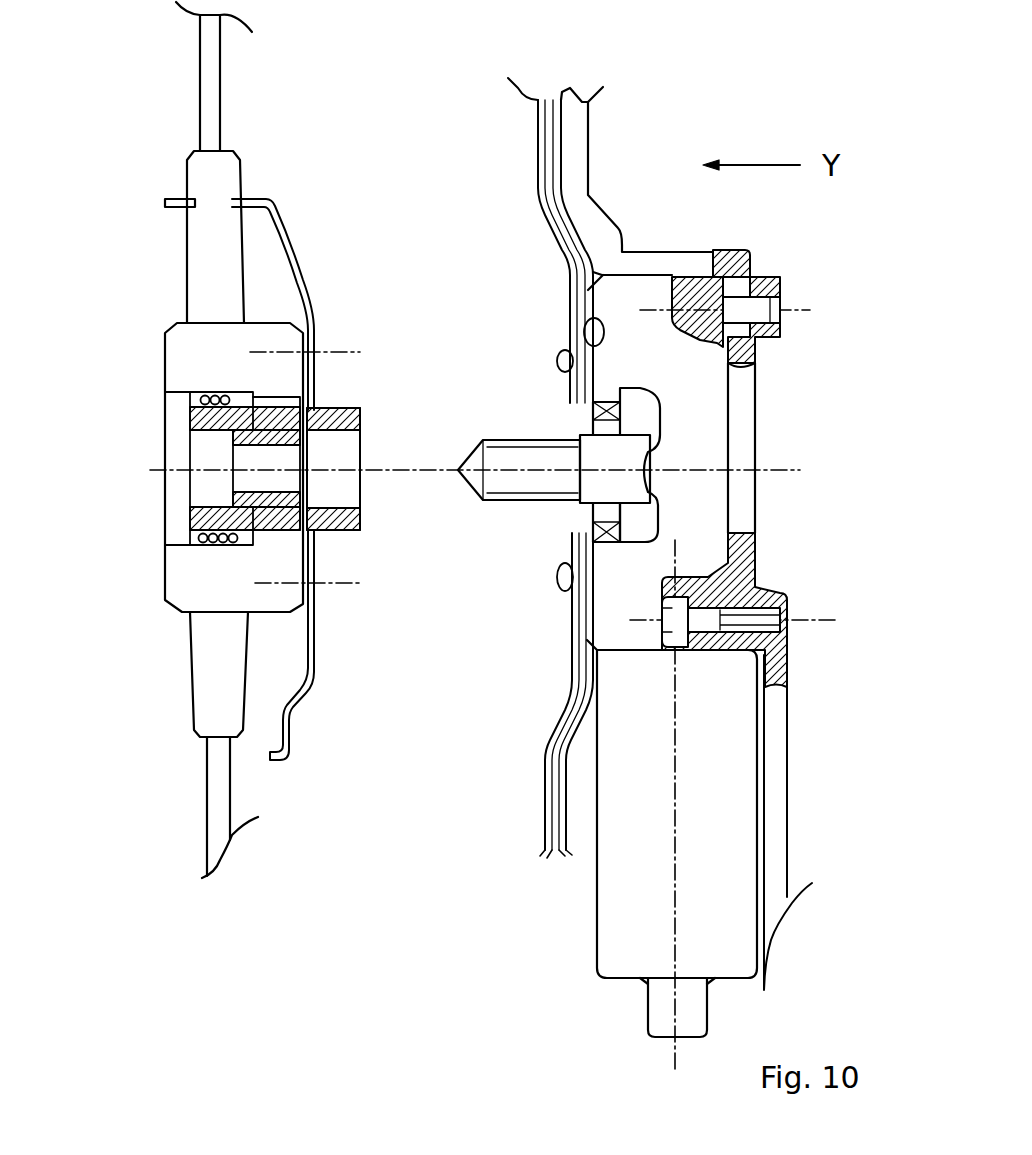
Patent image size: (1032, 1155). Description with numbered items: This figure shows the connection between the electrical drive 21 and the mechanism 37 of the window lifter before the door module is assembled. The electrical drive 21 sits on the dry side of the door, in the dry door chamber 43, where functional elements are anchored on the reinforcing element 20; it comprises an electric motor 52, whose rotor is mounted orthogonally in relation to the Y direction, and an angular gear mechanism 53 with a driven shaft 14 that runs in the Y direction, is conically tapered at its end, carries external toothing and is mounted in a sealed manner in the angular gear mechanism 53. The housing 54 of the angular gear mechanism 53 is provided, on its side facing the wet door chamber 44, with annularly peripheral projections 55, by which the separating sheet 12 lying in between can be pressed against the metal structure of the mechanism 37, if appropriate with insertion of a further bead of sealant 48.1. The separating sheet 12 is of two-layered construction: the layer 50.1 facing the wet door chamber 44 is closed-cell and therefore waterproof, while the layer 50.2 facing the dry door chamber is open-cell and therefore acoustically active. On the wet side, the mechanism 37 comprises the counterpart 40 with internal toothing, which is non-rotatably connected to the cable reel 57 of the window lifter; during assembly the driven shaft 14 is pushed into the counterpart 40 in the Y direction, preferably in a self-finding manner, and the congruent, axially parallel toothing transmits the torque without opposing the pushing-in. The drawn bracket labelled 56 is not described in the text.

The separating sheet 12 is at (530, 775).
The driven shaft 14 is at (538, 482).
The reinforcing element 20 is at (572, 140).
The electrical drive 21 is at (808, 434).
The mechanism 37 is at (300, 218).
The counterpart 40 is at (300, 487).
The dry door chamber 43 is at (887, 288).
The wet door chamber 44 is at (142, 139).
The further bead of sealant 48.1 is at (556, 357).
The layer facing the wet door chamber 50.1 is at (547, 837).
The layer facing the dry door chamber 50.2 is at (557, 850).
The electric motor 52 is at (720, 782).
The angular gear mechanism 53 is at (697, 510).
The housing 54 is at (685, 376).
The annularly peripheral projections 55 is at (588, 322).
The locking bracket 56 is at (320, 322).
The cable reel 57 is at (207, 514).